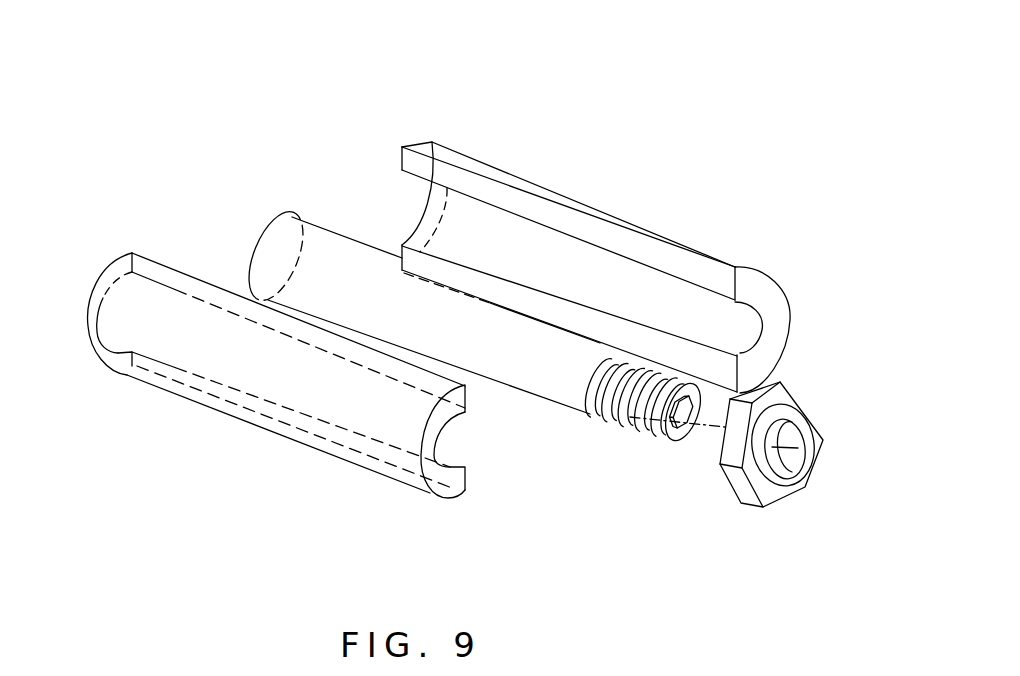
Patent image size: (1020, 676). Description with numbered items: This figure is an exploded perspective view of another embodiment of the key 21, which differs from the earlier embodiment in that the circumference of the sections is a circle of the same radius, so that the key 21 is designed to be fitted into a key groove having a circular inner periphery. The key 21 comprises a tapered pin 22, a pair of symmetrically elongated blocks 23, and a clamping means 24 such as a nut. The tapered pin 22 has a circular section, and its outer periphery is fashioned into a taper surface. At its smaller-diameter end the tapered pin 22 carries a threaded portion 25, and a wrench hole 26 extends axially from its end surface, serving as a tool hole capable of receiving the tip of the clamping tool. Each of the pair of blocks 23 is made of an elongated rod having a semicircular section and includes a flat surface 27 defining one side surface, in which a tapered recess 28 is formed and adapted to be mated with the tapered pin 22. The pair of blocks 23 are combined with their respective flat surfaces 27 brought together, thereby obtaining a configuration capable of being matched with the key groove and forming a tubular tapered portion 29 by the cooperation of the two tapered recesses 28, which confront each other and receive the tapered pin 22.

The key 21 is at (399, 88).
The tapered pin 22 is at (336, 226).
The blocks 23 is at (110, 272).
The clamping means 24 is at (816, 408).
The threaded portion 25 is at (630, 427).
The wrench hole 26 is at (685, 440).
The flat surface 27 is at (720, 282).
The tapered recess 28 is at (562, 263).
The tubular tapered portion 29 is at (274, 380).